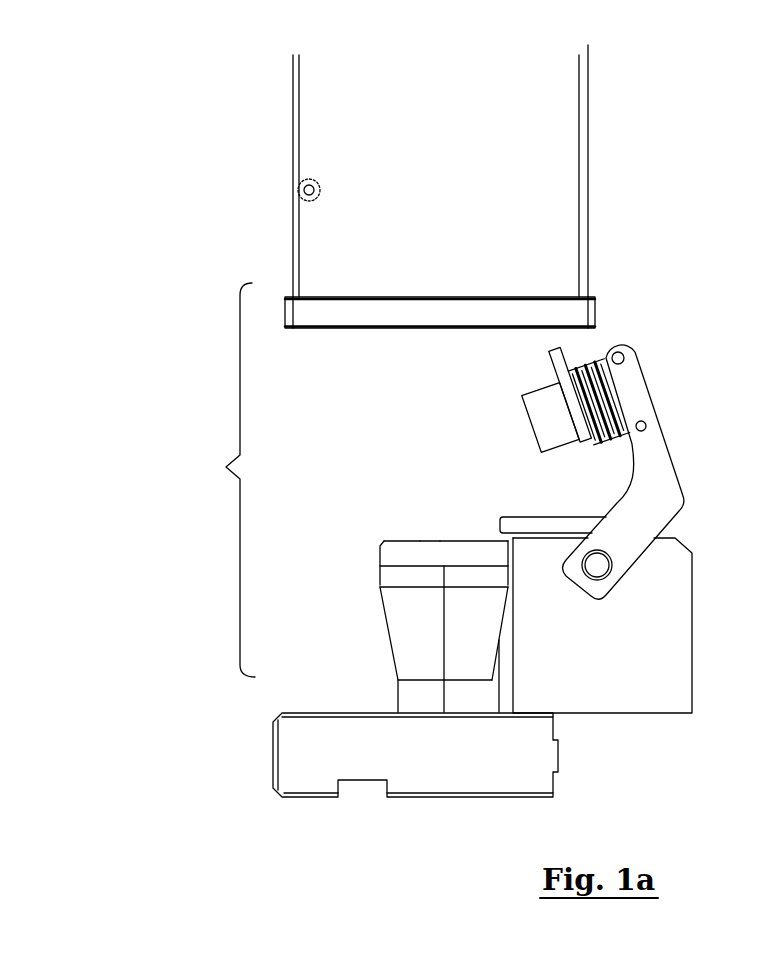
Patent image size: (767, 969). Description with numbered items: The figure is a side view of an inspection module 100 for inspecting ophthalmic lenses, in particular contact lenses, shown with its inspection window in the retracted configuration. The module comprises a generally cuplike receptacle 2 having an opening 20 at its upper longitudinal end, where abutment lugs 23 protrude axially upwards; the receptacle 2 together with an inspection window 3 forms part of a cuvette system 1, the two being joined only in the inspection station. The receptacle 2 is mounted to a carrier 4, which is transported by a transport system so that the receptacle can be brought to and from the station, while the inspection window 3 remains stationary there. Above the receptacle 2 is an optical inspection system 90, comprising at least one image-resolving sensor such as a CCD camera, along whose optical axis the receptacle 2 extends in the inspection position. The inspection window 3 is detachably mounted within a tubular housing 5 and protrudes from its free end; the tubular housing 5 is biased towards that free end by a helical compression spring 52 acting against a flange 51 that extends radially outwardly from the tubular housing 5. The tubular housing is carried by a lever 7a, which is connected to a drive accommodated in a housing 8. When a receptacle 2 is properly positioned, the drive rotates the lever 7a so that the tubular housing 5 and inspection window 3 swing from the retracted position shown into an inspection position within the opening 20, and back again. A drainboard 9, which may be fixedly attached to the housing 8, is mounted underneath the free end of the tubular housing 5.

The cuvette system 1 is at (420, 405).
The receptacle 2 is at (388, 613).
The inspection window 3 is at (553, 447).
The carrier 4 is at (282, 755).
The tubular housing 5 is at (617, 395).
The lever 7a is at (673, 468).
The housing 8 is at (692, 620).
The drainboard 9 is at (567, 525).
The opening 20 is at (429, 536).
The abutment lugs 23 is at (387, 540).
The flange 51 is at (366, 483).
The helical compression spring 52 is at (604, 350).
The optical inspection system 90 is at (303, 146).
The inspection module 100 is at (226, 467).